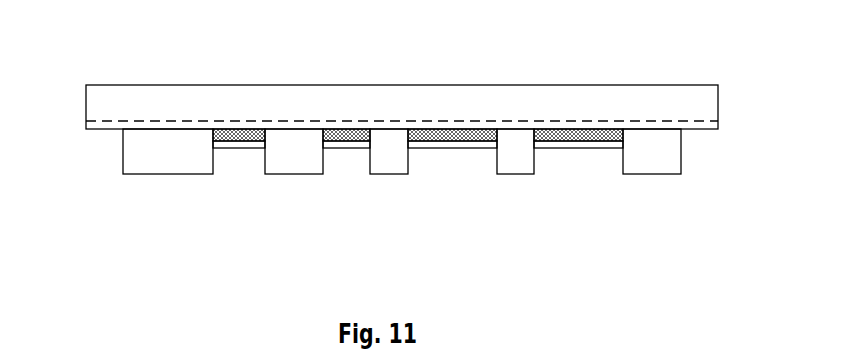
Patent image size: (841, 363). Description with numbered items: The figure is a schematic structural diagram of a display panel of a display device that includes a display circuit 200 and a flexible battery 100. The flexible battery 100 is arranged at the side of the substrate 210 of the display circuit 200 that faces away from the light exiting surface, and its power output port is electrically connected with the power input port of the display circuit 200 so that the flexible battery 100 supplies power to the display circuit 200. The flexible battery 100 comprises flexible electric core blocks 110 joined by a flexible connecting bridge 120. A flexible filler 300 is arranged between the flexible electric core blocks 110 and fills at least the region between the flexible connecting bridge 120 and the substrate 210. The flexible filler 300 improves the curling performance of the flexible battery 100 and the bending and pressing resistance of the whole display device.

The flexible battery 100 is at (402, 204).
The flexible electric core blocks 110 is at (152, 174).
The flexible connecting bridge 120 is at (347, 145).
The display circuit 200 is at (172, 85).
The substrate 210 is at (86, 129).
The flexible filler 300 is at (455, 132).